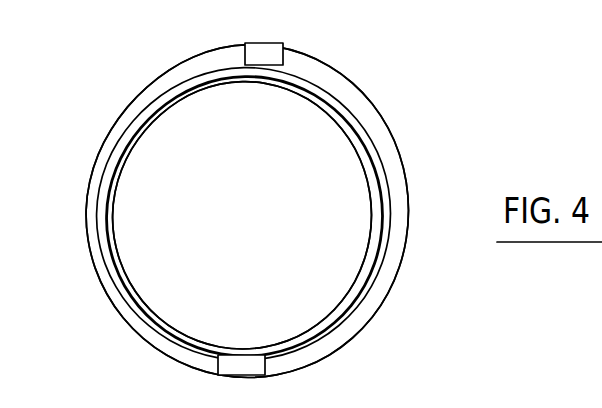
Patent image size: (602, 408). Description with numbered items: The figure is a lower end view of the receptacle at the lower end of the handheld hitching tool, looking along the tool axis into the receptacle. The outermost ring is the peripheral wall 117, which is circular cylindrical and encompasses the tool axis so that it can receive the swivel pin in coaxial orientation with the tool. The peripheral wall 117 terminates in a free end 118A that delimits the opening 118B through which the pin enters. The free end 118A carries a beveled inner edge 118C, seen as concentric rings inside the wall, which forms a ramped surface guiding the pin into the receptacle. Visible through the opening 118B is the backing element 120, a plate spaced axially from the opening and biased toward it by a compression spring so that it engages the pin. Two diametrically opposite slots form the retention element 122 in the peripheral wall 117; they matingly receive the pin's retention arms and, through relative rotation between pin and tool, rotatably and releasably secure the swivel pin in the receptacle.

The peripheral wall 117 is at (357, 83).
The free end 118A is at (396, 148).
The opening 118B is at (358, 115).
The beveled inner edge 118C is at (381, 225).
The backing element 120 is at (237, 207).
The retention element 122 is at (262, 33).